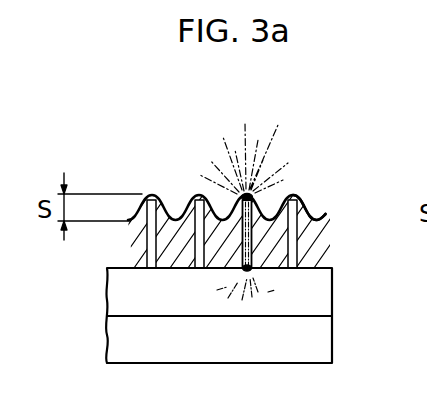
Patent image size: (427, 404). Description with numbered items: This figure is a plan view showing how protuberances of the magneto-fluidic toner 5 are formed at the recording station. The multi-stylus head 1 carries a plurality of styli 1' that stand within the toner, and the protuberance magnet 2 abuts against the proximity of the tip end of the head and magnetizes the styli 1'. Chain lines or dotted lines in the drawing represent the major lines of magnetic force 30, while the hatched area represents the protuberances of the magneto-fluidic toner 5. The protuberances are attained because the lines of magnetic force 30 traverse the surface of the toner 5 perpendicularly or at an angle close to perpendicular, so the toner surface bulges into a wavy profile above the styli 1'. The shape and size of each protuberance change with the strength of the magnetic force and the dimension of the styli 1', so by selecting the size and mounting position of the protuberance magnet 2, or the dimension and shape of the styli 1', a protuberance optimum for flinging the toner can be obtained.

The multi-stylus head 1 is at (236, 170).
The styli 1' is at (324, 208).
The lines of magnetic force 30 is at (290, 147).
The magneto-fluidic toner 5 is at (310, 256).
The protuberance magnet 2 is at (318, 302).